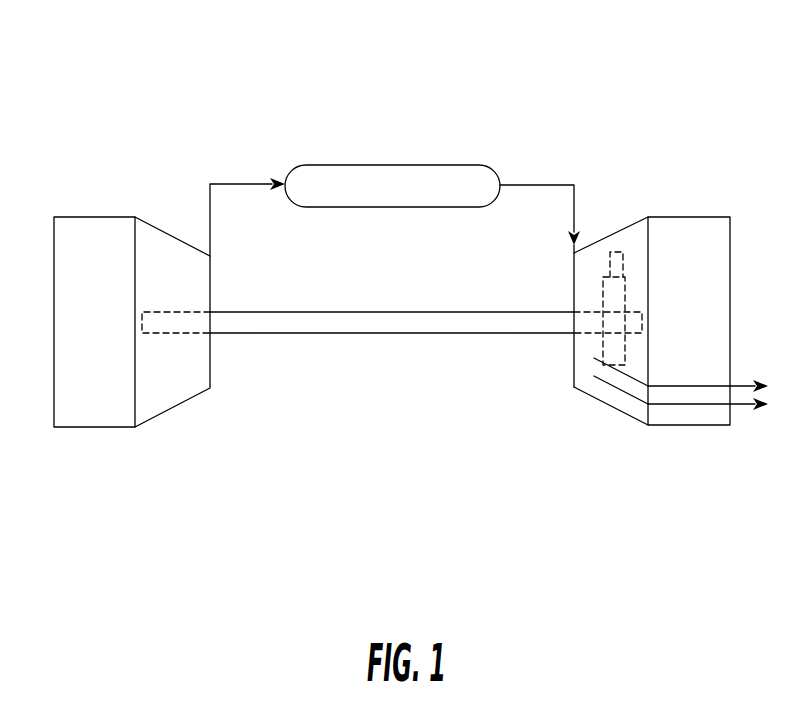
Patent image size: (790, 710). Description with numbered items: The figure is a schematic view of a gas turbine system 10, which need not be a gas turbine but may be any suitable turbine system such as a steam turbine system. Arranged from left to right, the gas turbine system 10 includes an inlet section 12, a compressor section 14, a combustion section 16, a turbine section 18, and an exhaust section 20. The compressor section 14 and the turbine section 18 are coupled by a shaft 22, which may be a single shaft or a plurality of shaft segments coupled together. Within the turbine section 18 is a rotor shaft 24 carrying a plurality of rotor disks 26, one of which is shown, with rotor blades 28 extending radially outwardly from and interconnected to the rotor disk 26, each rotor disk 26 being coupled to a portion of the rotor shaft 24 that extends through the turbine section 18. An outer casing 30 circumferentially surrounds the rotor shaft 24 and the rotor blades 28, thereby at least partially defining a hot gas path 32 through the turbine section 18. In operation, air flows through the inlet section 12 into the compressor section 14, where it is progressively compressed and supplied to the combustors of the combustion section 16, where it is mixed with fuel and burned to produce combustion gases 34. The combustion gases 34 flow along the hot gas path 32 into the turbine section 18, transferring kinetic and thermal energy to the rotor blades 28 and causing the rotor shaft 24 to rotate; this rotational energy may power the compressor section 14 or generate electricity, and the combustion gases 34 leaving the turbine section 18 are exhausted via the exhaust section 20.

The gas turbine system 10 is at (230, 72).
The inlet section 12 is at (102, 216).
The compressor section 14 is at (183, 240).
The combustion section 16 is at (458, 164).
The turbine section 18 is at (640, 217).
The exhaust section 20 is at (690, 216).
The shaft 22 is at (392, 334).
The rotor shaft 24 is at (632, 311).
The rotor disk 26 is at (603, 303).
The rotor blades 28 is at (608, 258).
The outer casing 30 is at (625, 414).
The hot gas path 32 is at (613, 387).
The combustion gases 34 is at (539, 186).